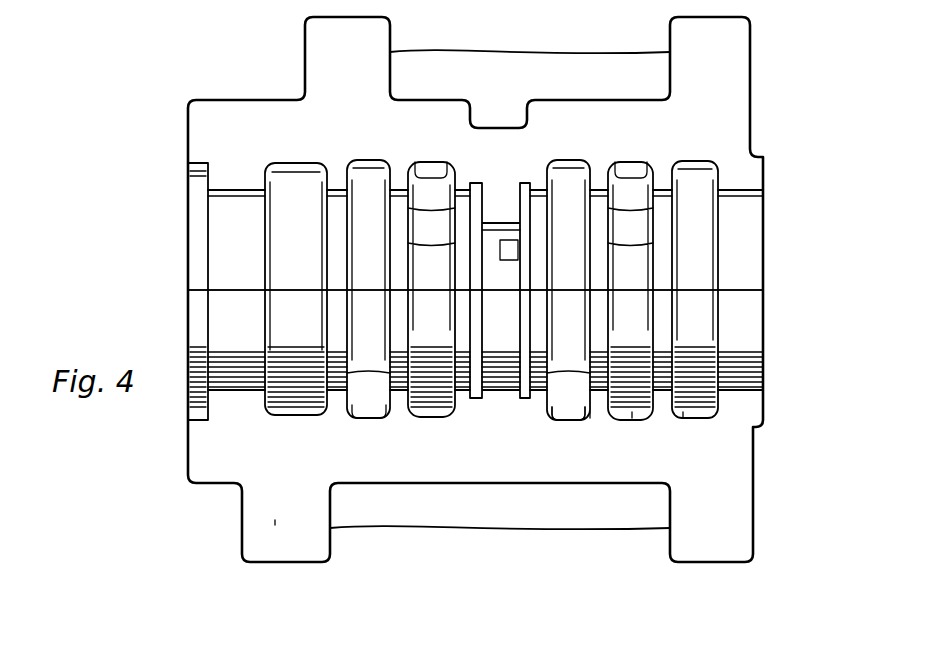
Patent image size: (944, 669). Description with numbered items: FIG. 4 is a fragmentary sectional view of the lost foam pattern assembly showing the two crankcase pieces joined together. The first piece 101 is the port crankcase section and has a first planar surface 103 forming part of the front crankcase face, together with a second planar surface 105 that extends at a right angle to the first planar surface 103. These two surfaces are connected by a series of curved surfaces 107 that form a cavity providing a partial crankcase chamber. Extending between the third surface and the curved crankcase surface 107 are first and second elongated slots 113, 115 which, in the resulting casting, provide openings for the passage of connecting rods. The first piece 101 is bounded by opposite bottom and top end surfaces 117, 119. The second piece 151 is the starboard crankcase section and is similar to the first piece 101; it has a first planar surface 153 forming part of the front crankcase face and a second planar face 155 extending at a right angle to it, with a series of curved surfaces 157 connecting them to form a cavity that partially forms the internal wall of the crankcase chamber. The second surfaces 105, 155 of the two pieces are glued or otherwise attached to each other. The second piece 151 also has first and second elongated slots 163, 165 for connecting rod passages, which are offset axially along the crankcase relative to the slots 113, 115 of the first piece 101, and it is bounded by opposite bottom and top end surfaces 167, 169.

The first piece 101 is at (297, 138).
The first planar surface 103 is at (386, 110).
The second planar surface 105 is at (240, 290).
The curved surfaces 107 is at (577, 178).
The elongated slot 113 is at (630, 168).
The elongated slot 115 is at (427, 170).
The bottom end surface 117 is at (188, 150).
The top end surface 119 is at (764, 180).
The second piece 151 is at (272, 491).
The first planar surface 153 is at (444, 477).
The second planar face 155 is at (243, 287).
The curved surfaces 157 is at (683, 410).
The elongated slot 163 is at (566, 410).
The elongated slot 165 is at (366, 410).
The bottom end surface 167 is at (187, 456).
The top end surface 169 is at (764, 406).